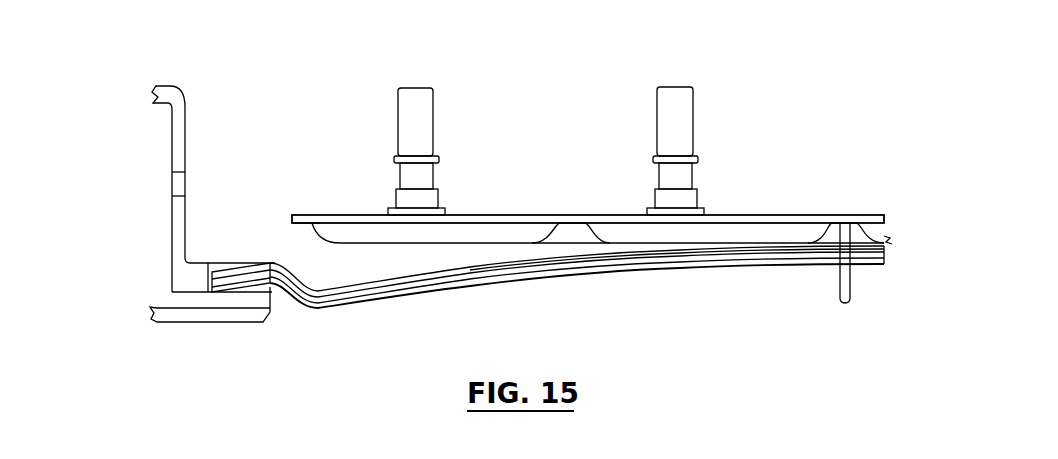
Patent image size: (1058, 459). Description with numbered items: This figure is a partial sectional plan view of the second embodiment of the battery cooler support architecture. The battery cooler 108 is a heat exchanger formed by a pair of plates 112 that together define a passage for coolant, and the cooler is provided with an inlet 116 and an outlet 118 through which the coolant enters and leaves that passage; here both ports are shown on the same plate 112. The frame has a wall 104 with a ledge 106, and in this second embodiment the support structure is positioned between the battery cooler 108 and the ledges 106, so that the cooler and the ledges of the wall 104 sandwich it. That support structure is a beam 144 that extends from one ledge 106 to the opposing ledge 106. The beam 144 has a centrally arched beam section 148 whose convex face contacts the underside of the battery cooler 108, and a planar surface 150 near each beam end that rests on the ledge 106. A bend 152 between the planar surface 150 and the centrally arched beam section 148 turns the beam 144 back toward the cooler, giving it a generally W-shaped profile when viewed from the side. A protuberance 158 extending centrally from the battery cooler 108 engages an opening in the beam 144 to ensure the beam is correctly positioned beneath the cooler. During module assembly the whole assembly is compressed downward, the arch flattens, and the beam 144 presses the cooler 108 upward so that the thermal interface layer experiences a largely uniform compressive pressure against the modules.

The wall 104 is at (183, 139).
The ledge 106 is at (240, 302).
The battery cooler 108 is at (777, 218).
The plate 112 is at (362, 222).
The inlet 116 is at (411, 108).
The outlet 118 is at (681, 113).
The beam 144 is at (603, 277).
The centrally arched beam section 148 is at (692, 260).
The planar surface 150 is at (248, 275).
The bend 152 is at (313, 300).
The protuberance 158 is at (848, 286).